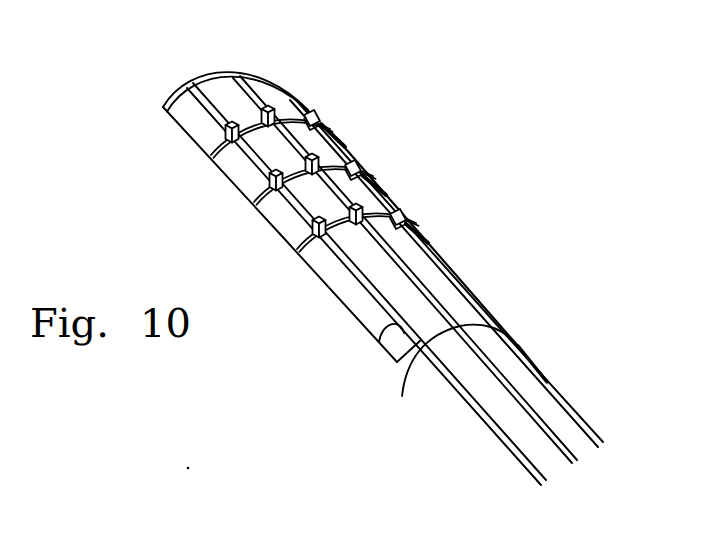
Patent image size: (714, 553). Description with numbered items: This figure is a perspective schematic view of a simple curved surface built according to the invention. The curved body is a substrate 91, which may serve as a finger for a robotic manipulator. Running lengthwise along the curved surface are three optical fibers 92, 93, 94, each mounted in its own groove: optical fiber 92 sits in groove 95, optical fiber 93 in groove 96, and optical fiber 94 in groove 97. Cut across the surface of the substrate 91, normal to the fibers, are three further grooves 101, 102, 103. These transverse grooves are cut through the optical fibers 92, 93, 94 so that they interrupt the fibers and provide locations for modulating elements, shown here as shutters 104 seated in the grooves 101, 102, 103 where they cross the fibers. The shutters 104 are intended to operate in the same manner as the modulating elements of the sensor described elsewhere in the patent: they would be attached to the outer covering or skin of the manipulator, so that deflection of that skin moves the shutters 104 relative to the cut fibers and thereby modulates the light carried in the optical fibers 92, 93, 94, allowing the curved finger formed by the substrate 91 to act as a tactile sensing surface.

The substrate 91 is at (474, 294).
The optical fiber 92 is at (580, 418).
The optical fiber 93 is at (500, 431).
The optical fiber 94 is at (518, 458).
The groove 95 is at (484, 311).
The groove 96 is at (422, 360).
The groove 97 is at (379, 342).
The groove 101 is at (197, 133).
The groove 102 is at (258, 198).
The groove 103 is at (306, 265).
The shutter 104 is at (197, 78).